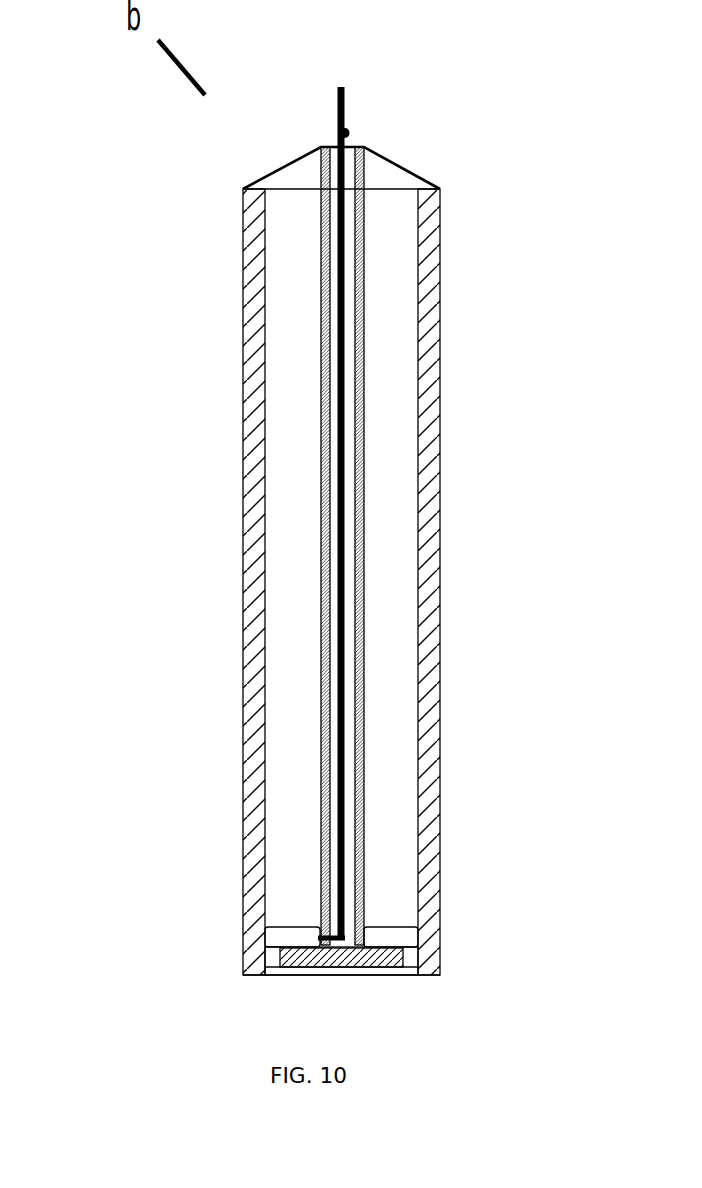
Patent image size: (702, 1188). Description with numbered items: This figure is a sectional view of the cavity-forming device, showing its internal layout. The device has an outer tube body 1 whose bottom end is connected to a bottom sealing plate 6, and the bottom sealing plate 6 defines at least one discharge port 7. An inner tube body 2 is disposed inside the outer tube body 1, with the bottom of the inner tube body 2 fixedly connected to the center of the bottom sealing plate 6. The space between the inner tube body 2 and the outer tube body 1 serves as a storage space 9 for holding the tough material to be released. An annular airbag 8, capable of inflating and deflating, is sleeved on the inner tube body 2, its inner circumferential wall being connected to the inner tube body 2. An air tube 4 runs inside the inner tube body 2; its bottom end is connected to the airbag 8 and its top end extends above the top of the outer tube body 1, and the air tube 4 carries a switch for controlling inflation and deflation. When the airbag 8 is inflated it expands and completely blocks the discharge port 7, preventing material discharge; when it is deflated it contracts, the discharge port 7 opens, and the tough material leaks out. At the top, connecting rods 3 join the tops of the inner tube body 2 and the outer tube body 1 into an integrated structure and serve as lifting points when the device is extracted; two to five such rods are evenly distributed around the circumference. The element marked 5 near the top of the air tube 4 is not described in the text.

The outer tube body 1 is at (298, 582).
The inner tube body 2 is at (323, 400).
The connecting rods 3 is at (366, 140).
The air tube 4 is at (301, 474).
The rod joint 5 is at (387, 92).
The bottom sealing plate 6 is at (371, 991).
The discharge port 7 is at (341, 990).
The airbag 8 is at (300, 885).
The storage space 9 is at (238, 557).